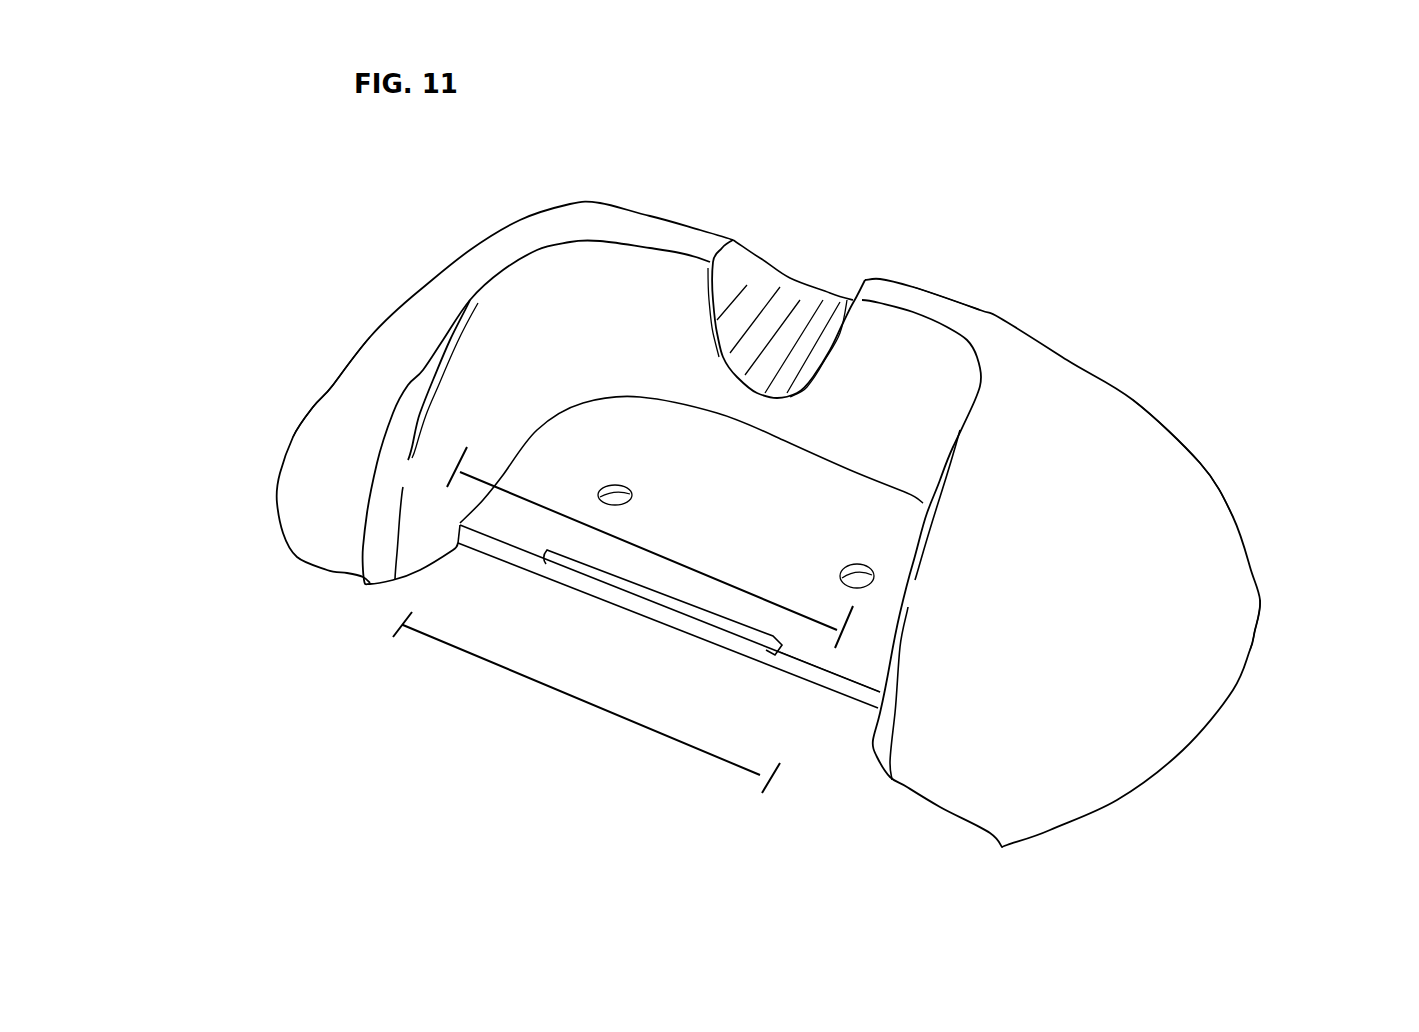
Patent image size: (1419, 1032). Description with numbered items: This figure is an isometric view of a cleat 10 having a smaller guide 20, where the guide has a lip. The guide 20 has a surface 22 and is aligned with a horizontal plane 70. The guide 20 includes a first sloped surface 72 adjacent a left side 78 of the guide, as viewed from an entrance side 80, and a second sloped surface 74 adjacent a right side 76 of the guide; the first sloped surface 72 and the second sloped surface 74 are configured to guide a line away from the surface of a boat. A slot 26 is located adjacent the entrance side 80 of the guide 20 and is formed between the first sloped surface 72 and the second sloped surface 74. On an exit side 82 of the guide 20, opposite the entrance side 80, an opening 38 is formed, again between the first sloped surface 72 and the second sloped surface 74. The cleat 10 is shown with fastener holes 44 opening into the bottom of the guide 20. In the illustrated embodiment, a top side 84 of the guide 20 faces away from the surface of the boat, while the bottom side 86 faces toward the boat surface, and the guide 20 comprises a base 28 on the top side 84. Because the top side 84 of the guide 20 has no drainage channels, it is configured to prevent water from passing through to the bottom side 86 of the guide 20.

The cleat 10 is at (270, 153).
The guide 20 is at (413, 210).
The surface 22 is at (1057, 380).
The slot 26 is at (828, 183).
The base 28 is at (507, 517).
The opening 38 is at (627, 542).
The fastener holes 44 is at (846, 568).
The horizontal plane 70 is at (420, 638).
The first sloped surface 72 is at (1153, 522).
The second sloped surface 74 is at (317, 450).
The right side 76 is at (297, 322).
The left side 78 is at (1318, 628).
The entrance side 80 is at (790, 278).
The exit side 82 is at (633, 678).
The top side 84 is at (933, 270).
The bottom side 86 is at (790, 707).